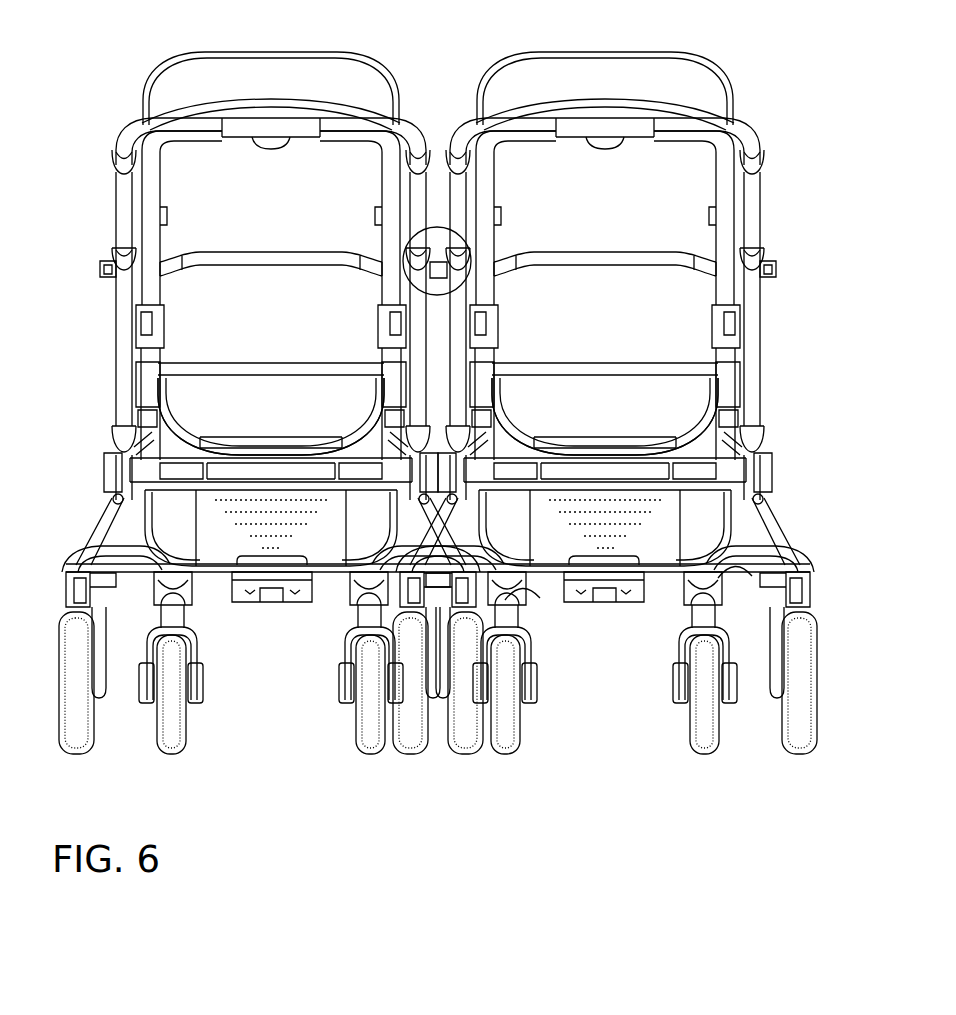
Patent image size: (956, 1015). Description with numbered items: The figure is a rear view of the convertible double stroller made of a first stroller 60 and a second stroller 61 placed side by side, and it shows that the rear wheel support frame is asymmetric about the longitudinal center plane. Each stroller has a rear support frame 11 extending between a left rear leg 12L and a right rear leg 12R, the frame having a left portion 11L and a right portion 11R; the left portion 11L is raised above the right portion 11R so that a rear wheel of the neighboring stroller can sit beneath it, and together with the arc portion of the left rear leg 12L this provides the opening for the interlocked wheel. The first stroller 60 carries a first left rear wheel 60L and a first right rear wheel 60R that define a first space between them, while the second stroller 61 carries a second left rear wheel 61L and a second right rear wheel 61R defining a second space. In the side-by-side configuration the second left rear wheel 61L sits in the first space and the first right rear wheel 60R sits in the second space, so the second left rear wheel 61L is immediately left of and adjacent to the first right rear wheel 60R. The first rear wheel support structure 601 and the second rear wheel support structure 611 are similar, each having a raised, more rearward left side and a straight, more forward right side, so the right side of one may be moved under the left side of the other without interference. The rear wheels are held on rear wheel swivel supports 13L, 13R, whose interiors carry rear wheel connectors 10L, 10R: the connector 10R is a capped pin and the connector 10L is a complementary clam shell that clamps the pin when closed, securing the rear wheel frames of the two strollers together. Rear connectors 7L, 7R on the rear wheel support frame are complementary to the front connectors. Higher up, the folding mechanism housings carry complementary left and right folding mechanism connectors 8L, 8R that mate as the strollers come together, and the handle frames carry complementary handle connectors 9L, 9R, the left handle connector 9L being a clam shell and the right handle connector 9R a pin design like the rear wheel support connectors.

The first stroller 60 is at (326, 45).
The second stroller 61 is at (712, 61).
The left handle connector 9L is at (115, 248).
The right handle connector 9R is at (762, 252).
The left rear leg 12L is at (423, 533).
The right rear leg 12R is at (762, 515).
The left rear wheel swivel support 13L is at (73, 570).
The right rear wheel swivel support 13R is at (806, 576).
The left folding mechanism connector 8L is at (271, 416).
The right folding mechanism connector 8R is at (517, 458).
The rear support frame 11 is at (550, 563).
The left portion 11L is at (523, 600).
The right portion 11R is at (733, 563).
The left rear connector 7L is at (527, 605).
The right rear connector 7R is at (687, 560).
The first rear wheel support structure 601 is at (213, 600).
The second rear wheel support structure 611 is at (658, 583).
The rear wheel connector 10L is at (103, 588).
The rear wheel connector 10R is at (760, 582).
The first left rear wheel 60L is at (73, 757).
The first right rear wheel 60R is at (478, 757).
The second left rear wheel 61L is at (407, 757).
The second right rear wheel 61R is at (792, 755).